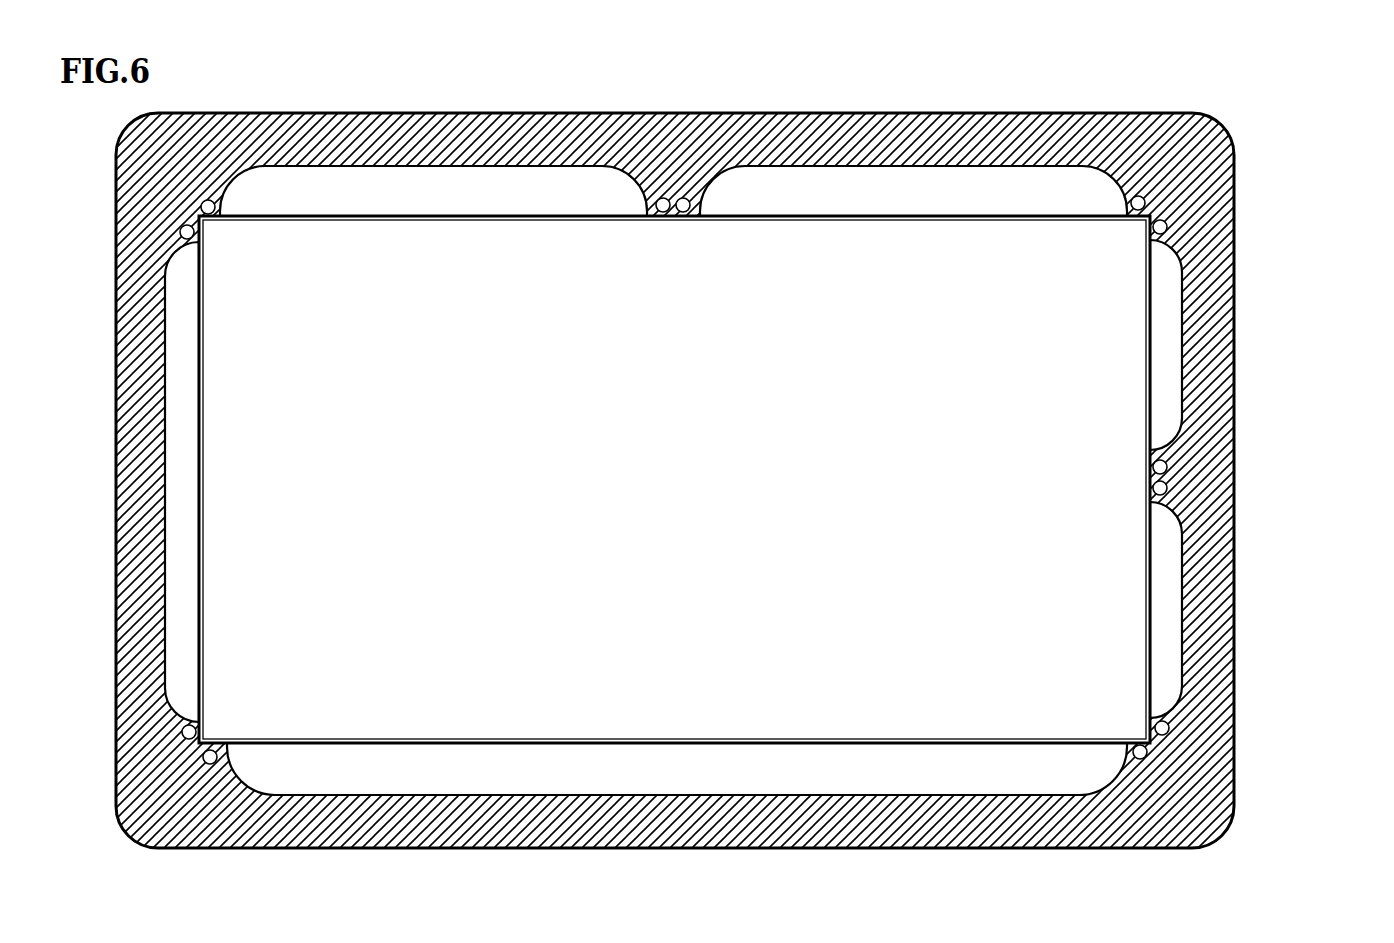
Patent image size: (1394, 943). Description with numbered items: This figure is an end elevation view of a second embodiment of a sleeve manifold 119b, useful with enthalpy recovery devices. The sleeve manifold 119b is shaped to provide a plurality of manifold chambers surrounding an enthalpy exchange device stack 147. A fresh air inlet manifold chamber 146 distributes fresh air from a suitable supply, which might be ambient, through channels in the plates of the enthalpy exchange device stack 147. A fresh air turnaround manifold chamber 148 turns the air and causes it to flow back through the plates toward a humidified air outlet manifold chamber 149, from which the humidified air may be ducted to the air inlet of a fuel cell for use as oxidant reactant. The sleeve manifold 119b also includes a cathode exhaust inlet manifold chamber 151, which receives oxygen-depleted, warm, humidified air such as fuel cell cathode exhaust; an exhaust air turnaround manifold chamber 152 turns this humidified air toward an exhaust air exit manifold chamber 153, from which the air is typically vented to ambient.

The sleeve manifold 119b is at (1253, 155).
The fresh air inlet manifold chamber 146 is at (432, 198).
The enthalpy exchange device stack 147 is at (714, 487).
The fresh air turnaround manifold chamber 148 is at (714, 782).
The humidified air outlet manifold chamber 149 is at (962, 198).
The cathode exhaust inlet manifold chamber 151 is at (1168, 368).
The exhaust air turnaround manifold chamber 152 is at (178, 451).
The exhaust air exit manifold chamber 153 is at (1165, 633).